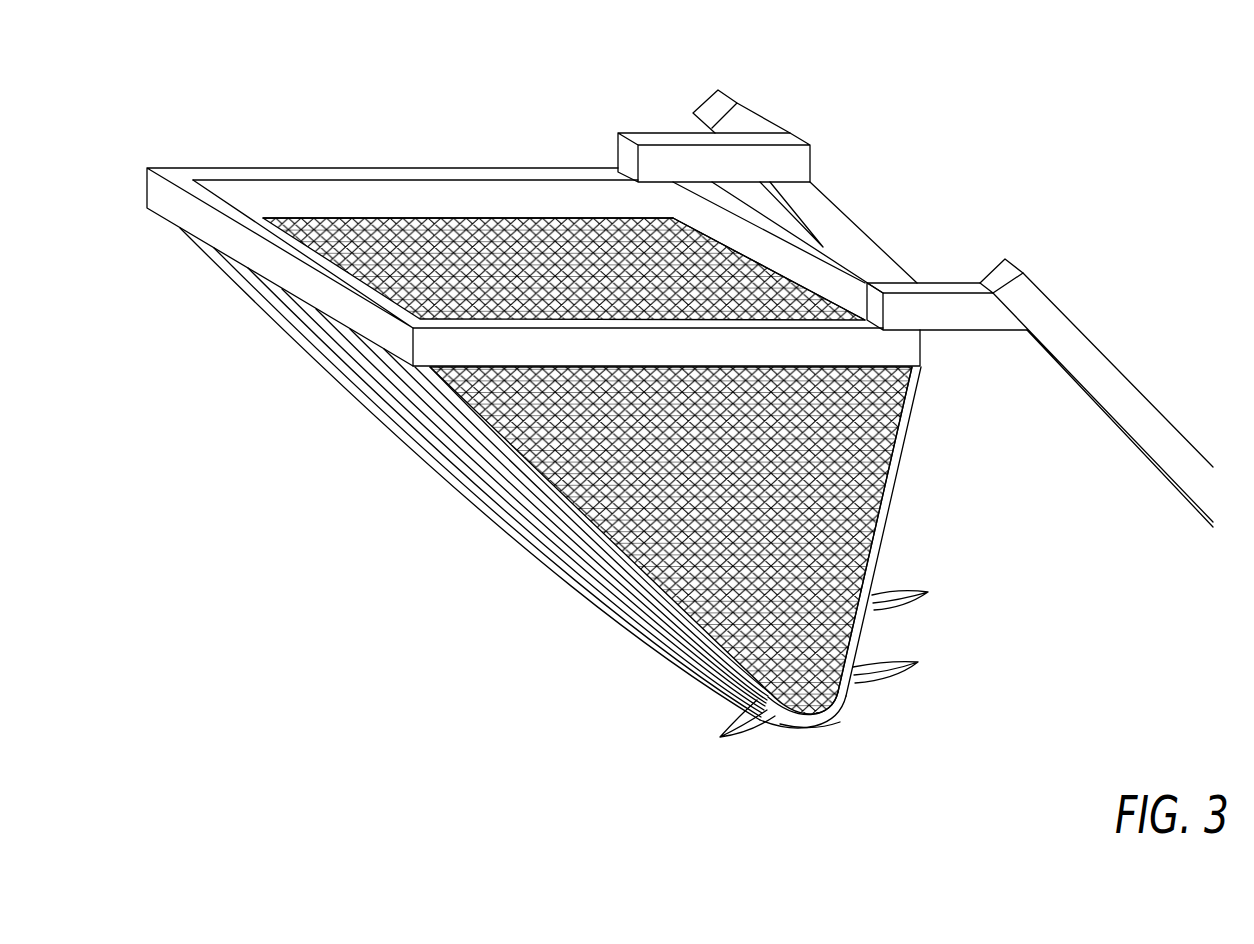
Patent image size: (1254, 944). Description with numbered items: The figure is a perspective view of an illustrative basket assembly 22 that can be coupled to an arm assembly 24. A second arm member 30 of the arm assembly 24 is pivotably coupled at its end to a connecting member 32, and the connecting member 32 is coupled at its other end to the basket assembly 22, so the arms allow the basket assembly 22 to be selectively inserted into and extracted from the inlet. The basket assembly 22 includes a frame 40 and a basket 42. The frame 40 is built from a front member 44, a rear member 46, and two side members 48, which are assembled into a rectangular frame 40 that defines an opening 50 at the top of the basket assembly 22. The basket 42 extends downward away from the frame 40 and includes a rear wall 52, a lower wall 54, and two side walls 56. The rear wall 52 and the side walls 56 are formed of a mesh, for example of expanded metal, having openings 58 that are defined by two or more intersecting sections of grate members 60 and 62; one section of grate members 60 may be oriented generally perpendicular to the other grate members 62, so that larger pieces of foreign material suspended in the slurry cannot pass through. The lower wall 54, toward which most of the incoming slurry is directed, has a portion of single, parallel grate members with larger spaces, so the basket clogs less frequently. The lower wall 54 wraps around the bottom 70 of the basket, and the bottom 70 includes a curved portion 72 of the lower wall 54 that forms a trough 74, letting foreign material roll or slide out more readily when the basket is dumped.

The basket assembly 22 is at (547, 414).
The arm assembly 24 is at (915, 278).
The second arm member 30 is at (1078, 357).
The connecting member 32 is at (658, 152).
The frame 40 is at (547, 370).
The basket 42 is at (568, 514).
The front member 44 is at (183, 215).
The rear member 46 is at (778, 233).
The side member 48 is at (367, 197).
The opening 50 is at (301, 218).
The rear wall 52 is at (744, 303).
The lower wall 54 is at (410, 440).
The side wall 56 is at (444, 222).
The openings 58 is at (914, 589).
The grate members 60 is at (732, 727).
The grate members 62 is at (900, 661).
The bottom 70 is at (840, 728).
The curved portion 72 is at (815, 724).
The trough 74 is at (778, 655).